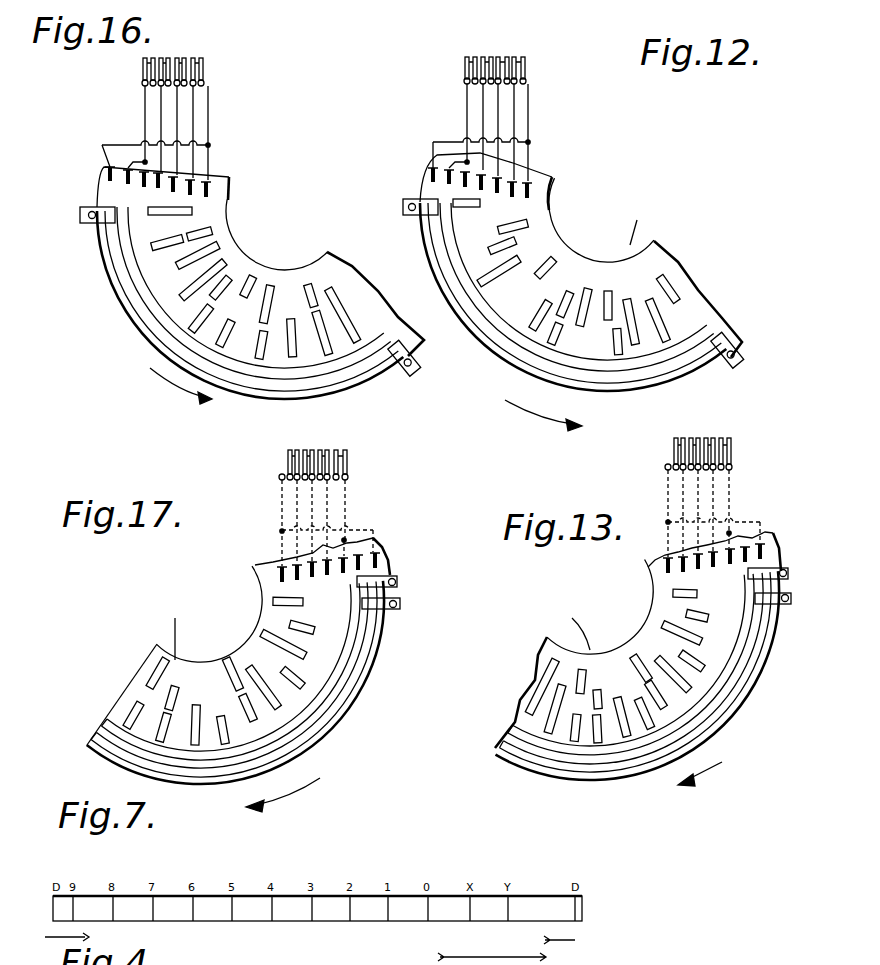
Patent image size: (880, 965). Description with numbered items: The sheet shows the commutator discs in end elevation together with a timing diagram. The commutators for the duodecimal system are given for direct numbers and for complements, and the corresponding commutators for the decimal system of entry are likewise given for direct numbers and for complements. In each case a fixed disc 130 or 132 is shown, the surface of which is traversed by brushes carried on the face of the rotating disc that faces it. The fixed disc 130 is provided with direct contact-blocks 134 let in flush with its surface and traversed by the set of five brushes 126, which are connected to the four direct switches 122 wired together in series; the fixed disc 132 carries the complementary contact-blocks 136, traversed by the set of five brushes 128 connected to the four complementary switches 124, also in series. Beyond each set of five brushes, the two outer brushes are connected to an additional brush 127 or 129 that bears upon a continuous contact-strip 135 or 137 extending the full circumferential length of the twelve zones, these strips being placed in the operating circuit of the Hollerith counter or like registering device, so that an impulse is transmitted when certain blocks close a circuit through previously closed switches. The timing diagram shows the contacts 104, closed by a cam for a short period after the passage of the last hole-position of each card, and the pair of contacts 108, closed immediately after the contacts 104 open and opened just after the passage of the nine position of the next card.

In FIG. 16, the direct switches 122 is at (197, 57).
In FIG. 12, the direct switches 122 is at (520, 56).
In FIG. 17, the complementary switches 124 is at (341, 448).
In FIG. 13, the complementary switches 124 is at (728, 437).
In FIG. 16, the brushes 126 is at (200, 190).
In FIG. 12, the brushes 126 is at (522, 196).
In FIG. 16, the additional brush 127 is at (128, 170).
In FIG. 12, the additional brush 127 is at (449, 170).
In FIG. 17, the brushes 128 is at (312, 585).
In FIG. 13, the brushes 128 is at (683, 575).
In FIG. 17, the additional brush 129 is at (378, 550).
In FIG. 13, the additional brush 129 is at (752, 562).
In FIG. 16, the fixed disc 130 is at (323, 262).
In FIG. 12, the fixed disc 130 is at (660, 262).
In FIG. 17, the fixed disc 132 is at (205, 665).
In FIG. 13, the fixed disc 132 is at (718, 649).
In FIG. 16, the direct contact-blocks 134 is at (248, 288).
In FIG. 12, the direct contact-blocks 134 is at (640, 296).
In FIG. 16, the contact-strip 135 is at (258, 375).
In FIG. 12, the contact-strip 135 is at (532, 368).
In FIG. 17, the complementary contact-blocks 136 is at (285, 672).
In FIG. 13, the complementary contact-blocks 136 is at (648, 765).
In FIG. 17, the contact-strip 137 is at (338, 712).
In FIG. 13, the contact-strip 137 is at (740, 697).
In FIG. 7, the contacts 104 is at (493, 954).
In FIG. 7, the contacts 108 is at (556, 942).